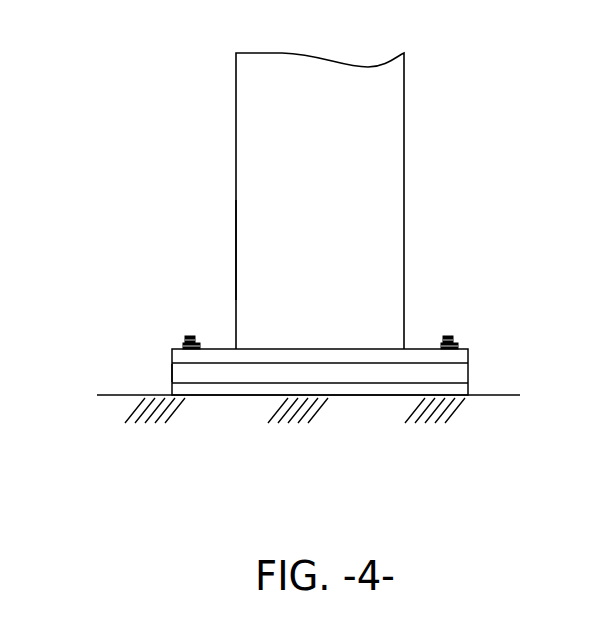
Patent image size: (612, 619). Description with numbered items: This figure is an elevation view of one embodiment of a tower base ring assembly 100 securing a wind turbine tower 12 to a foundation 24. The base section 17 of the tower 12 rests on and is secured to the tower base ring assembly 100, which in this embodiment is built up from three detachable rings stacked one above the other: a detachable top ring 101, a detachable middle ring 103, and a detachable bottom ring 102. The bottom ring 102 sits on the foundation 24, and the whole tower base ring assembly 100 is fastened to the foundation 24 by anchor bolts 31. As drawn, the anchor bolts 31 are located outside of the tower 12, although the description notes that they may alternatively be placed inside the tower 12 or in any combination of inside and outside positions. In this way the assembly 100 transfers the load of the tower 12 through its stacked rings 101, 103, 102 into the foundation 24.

The tower 12 is at (219, 114).
The base section 17 is at (258, 248).
The foundation 24 is at (122, 393).
The anchor bolts 31 is at (185, 343).
The tower base ring assembly 100 is at (448, 310).
The detachable top ring 101 is at (457, 362).
The detachable bottom ring 102 is at (462, 390).
The detachable middle ring 103 is at (180, 376).